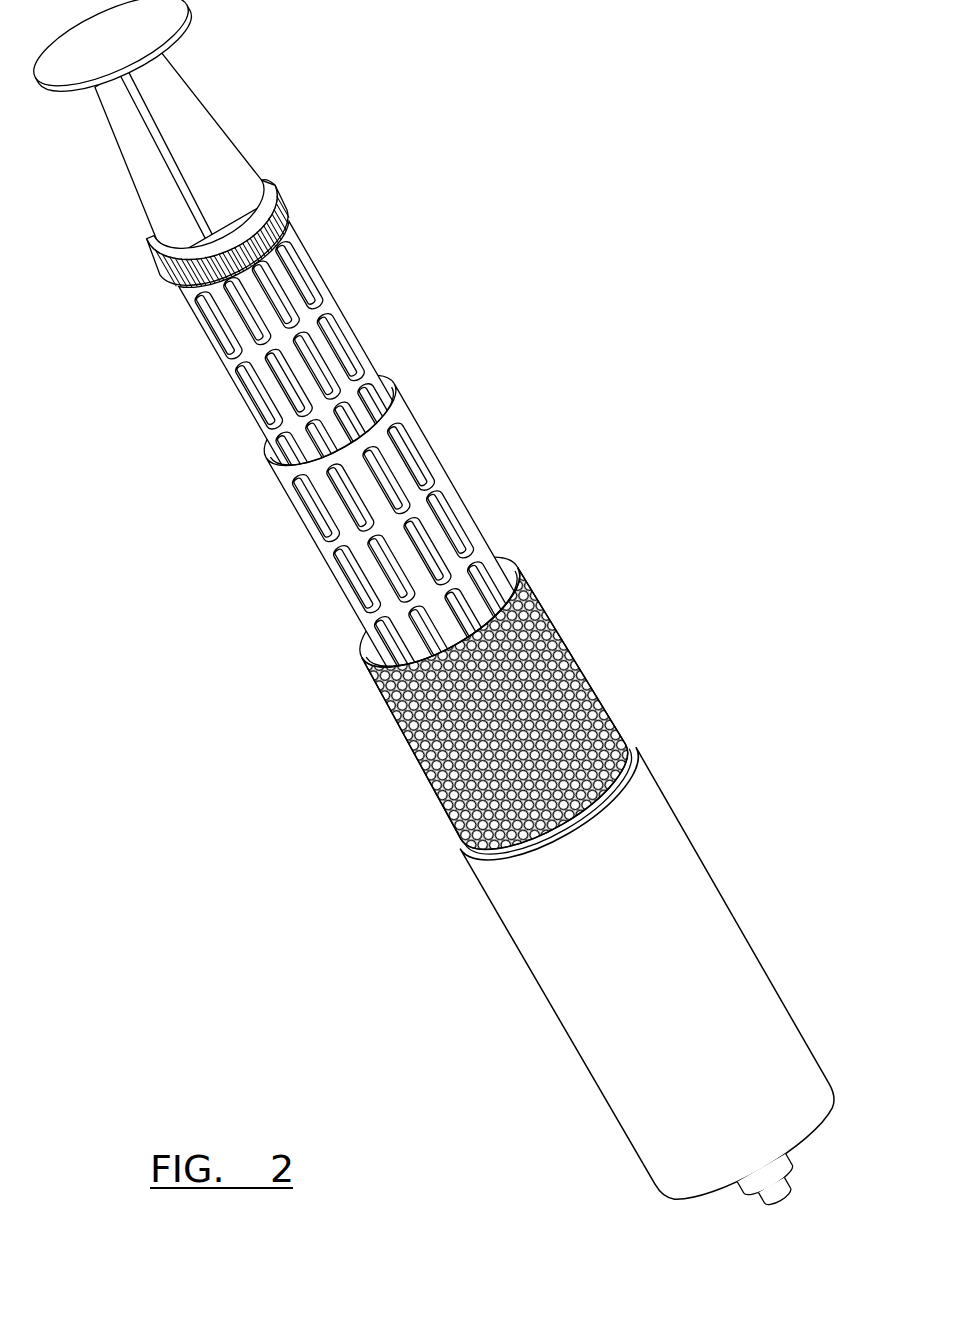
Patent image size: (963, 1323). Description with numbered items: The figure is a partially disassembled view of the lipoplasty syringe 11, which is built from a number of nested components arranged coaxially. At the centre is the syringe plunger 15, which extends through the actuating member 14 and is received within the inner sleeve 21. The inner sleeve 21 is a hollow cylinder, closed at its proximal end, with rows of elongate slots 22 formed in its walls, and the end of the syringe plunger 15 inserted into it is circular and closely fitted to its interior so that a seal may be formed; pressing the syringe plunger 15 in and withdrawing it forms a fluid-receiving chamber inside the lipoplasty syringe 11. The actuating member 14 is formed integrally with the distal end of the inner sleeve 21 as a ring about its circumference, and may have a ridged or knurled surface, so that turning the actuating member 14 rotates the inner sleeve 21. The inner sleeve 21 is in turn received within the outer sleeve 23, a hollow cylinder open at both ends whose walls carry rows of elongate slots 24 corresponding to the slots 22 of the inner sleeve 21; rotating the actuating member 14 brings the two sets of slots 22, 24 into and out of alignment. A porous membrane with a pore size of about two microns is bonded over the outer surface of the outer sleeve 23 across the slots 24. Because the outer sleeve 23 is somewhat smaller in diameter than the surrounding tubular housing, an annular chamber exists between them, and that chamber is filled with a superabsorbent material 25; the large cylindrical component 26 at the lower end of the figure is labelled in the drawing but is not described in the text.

The lipoplasty syringe 11 is at (312, 604).
The actuating member 14 is at (280, 197).
The syringe plunger 15 is at (192, 127).
The inner sleeve 21 is at (307, 263).
The elongate slots 22 is at (340, 345).
The outer sleeve 23 is at (420, 440).
The elongate slots 24 is at (448, 530).
The superabsorbent material 25 is at (563, 694).
The body 26 is at (688, 945).